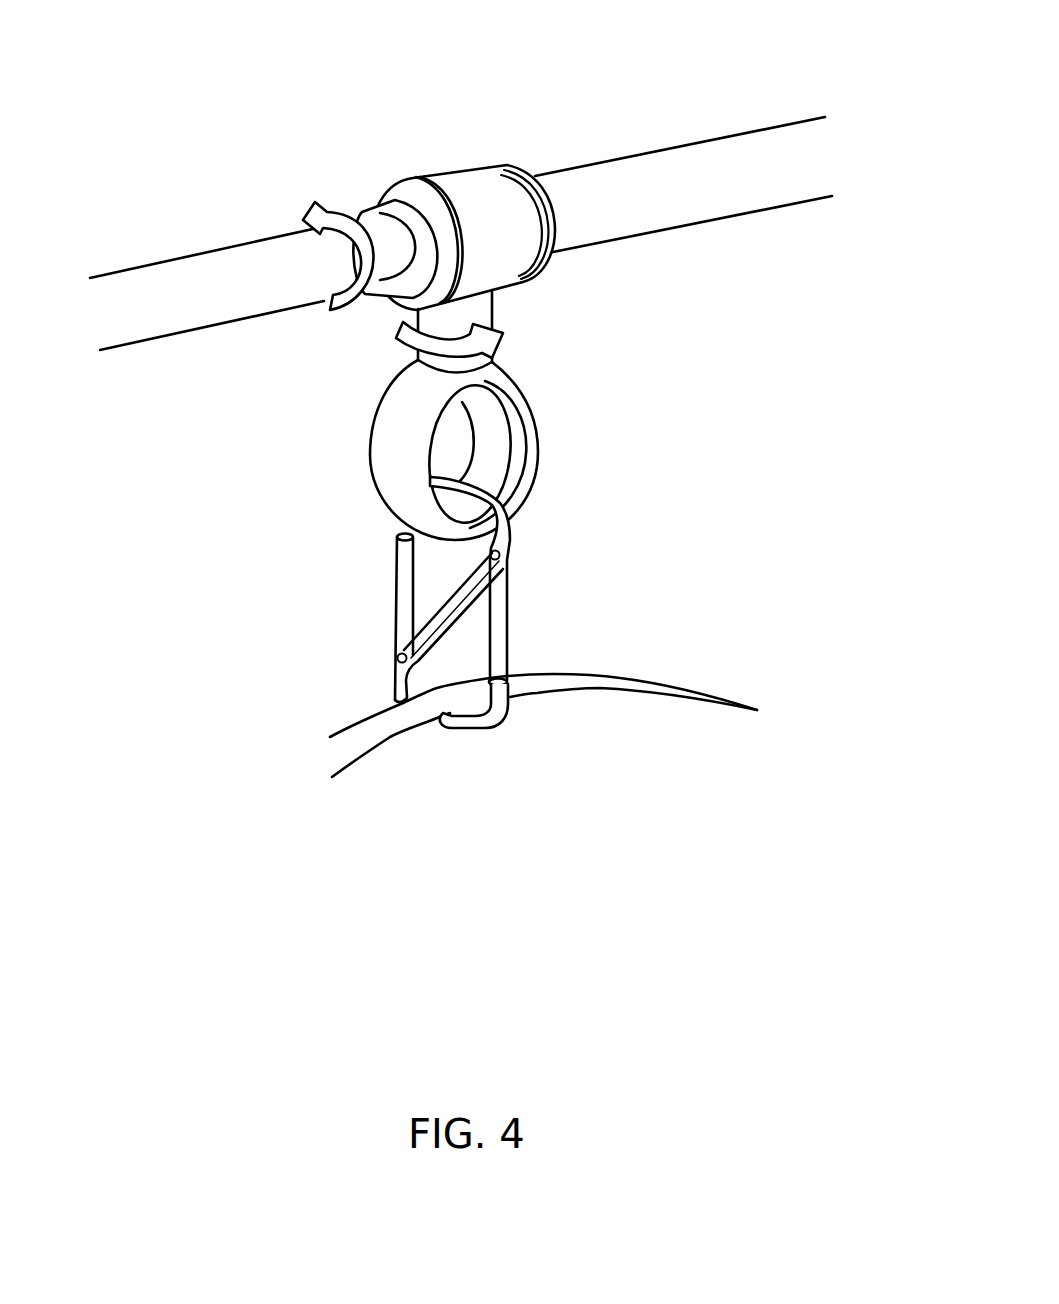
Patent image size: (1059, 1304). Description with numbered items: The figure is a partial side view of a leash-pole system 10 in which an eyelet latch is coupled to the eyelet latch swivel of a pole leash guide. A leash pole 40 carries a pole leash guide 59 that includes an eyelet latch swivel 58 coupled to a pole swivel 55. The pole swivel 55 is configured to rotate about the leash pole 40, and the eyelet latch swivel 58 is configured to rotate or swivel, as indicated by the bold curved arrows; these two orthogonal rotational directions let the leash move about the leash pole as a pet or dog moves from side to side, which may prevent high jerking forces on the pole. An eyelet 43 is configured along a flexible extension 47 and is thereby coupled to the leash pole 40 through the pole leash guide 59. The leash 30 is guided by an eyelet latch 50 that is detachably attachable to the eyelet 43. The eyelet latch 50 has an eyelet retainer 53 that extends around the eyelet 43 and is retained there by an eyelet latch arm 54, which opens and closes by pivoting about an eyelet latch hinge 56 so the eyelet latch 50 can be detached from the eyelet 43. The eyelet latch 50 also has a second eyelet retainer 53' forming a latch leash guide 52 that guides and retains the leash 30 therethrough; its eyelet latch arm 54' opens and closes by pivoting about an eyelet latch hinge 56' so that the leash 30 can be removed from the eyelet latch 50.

The leash-pole system 10 is at (226, 138).
The leash 30 is at (372, 732).
The leash pole 40 is at (653, 197).
The eyelet 43 is at (513, 452).
The flexible extension 47 is at (713, 183).
The eyelet latch 50 is at (509, 513).
The latch leash guide 52 is at (513, 715).
The eyelet retainer 53 is at (401, 625).
The eyelet retainer 53' is at (514, 663).
The eyelet latch arm 54 is at (340, 617).
The eyelet latch arm 54' is at (576, 640).
The pole swivel 55 is at (463, 197).
The eyelet latch hinge 56 is at (339, 664).
The eyelet latch hinge 56' is at (571, 565).
The eyelet latch swivel 58 is at (468, 322).
The pole leash guide 59 is at (510, 203).